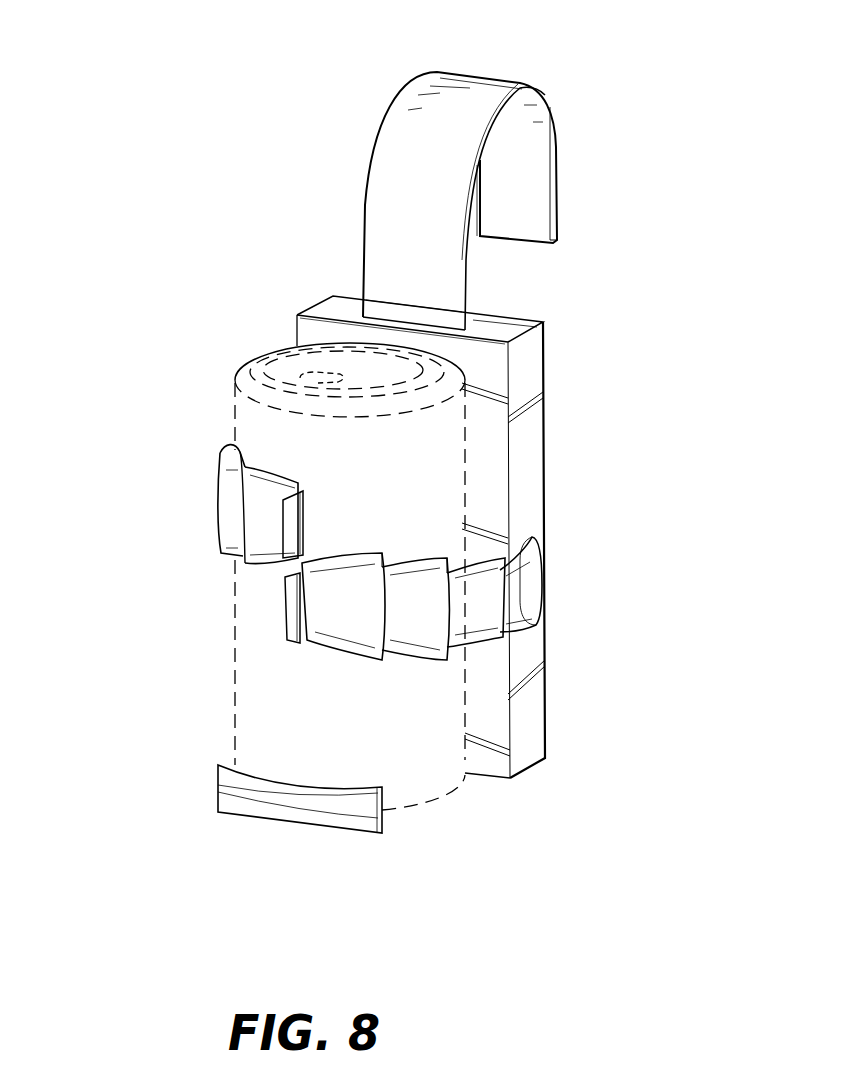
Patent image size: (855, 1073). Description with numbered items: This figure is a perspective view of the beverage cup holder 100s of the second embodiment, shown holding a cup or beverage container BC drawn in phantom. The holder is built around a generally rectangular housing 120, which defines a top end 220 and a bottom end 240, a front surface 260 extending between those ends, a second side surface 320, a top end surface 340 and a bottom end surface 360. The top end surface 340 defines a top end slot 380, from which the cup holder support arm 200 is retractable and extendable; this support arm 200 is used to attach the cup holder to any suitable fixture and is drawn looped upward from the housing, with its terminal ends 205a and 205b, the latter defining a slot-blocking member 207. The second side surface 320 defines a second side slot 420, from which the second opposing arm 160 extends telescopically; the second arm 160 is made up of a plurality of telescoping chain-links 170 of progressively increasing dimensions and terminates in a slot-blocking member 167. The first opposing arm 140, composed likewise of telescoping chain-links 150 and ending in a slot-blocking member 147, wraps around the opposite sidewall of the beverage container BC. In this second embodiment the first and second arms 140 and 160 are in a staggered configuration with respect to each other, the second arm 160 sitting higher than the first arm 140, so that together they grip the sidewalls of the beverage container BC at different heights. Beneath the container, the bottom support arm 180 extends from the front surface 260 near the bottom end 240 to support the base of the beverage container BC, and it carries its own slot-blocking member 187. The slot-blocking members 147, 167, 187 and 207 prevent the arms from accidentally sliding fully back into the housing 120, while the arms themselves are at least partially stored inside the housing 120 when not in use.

The beverage cup holder 100s is at (587, 737).
The housing 120 is at (547, 688).
The first opposing arm 140 is at (207, 485).
The slot-blocking member 147 is at (293, 530).
The telescoping chain-links 150 is at (227, 517).
The second opposing arm 160 is at (520, 600).
The slot-blocking member 167 is at (293, 623).
The telescoping chain-links 170 is at (483, 608).
The bottom support arm 180 is at (267, 810).
The slot-blocking member 187 is at (233, 802).
The cup holder support arm 200 is at (365, 200).
The terminal end of cup holder support arm 205a is at (436, 295).
The terminal end of cup holder support arm 205b is at (543, 225).
The slot-blocking member 207 is at (562, 232).
The top end 220 is at (382, 334).
The bottom end 240 is at (493, 777).
The front surface 260 is at (485, 488).
The second side surface 320 is at (528, 378).
The top end surface 340 is at (338, 307).
The bottom end surface 360 is at (477, 760).
The top end slot 380 is at (473, 320).
The second side slot 420 is at (526, 538).
The beverage container BC is at (378, 486).